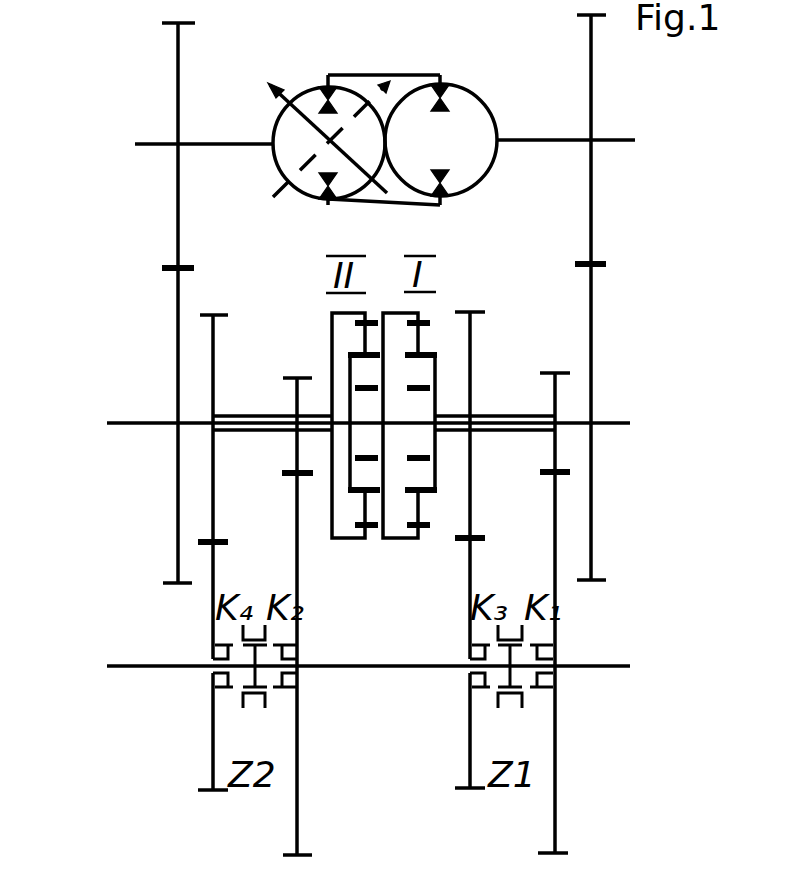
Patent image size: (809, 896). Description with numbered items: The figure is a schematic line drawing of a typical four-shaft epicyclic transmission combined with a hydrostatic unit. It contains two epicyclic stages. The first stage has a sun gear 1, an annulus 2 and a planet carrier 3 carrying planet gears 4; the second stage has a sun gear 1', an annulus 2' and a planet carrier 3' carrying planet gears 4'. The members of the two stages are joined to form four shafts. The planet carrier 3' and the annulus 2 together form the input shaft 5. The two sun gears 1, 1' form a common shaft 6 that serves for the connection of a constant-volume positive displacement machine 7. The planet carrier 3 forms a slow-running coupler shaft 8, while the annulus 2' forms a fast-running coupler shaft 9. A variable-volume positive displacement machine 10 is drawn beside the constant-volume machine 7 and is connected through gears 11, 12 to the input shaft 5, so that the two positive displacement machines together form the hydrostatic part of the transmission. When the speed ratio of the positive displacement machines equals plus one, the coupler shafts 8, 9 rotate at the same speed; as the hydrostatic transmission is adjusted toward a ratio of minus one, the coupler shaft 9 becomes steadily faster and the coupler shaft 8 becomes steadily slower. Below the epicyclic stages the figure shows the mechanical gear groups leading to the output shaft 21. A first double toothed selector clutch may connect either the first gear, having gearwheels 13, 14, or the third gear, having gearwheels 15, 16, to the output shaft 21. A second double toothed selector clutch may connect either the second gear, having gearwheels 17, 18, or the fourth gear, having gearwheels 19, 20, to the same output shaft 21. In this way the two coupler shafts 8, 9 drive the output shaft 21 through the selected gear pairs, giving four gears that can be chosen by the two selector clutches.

The sun gear 1 is at (406, 427).
The sun gear 1' is at (388, 418).
The annulus 2 is at (438, 398).
The annulus 2' is at (319, 398).
The planet carrier 3 is at (439, 419).
The planet carrier 3' is at (341, 452).
The planet gears 4 is at (464, 420).
The planet gears 4' is at (322, 420).
The input shaft 5 is at (132, 423).
The shaft 6 is at (620, 423).
The constant-volume positive displacement machine 7 is at (458, 154).
The slow-running coupler shaft 8 is at (498, 416).
The fast-running coupler shaft 9 is at (265, 433).
The variable-volume positive displacement machine 10 is at (273, 153).
The gear 11 is at (178, 342).
The gear 12 is at (178, 192).
The gearwheel 13 is at (555, 753).
The gearwheel 14 is at (558, 397).
The gearwheel 15 is at (465, 723).
The gearwheel 16 is at (470, 487).
The gearwheel 17 is at (297, 767).
The gearwheel 18 is at (297, 405).
The gearwheel 19 is at (208, 728).
The gearwheel 20 is at (210, 497).
The output shaft 21 is at (597, 666).